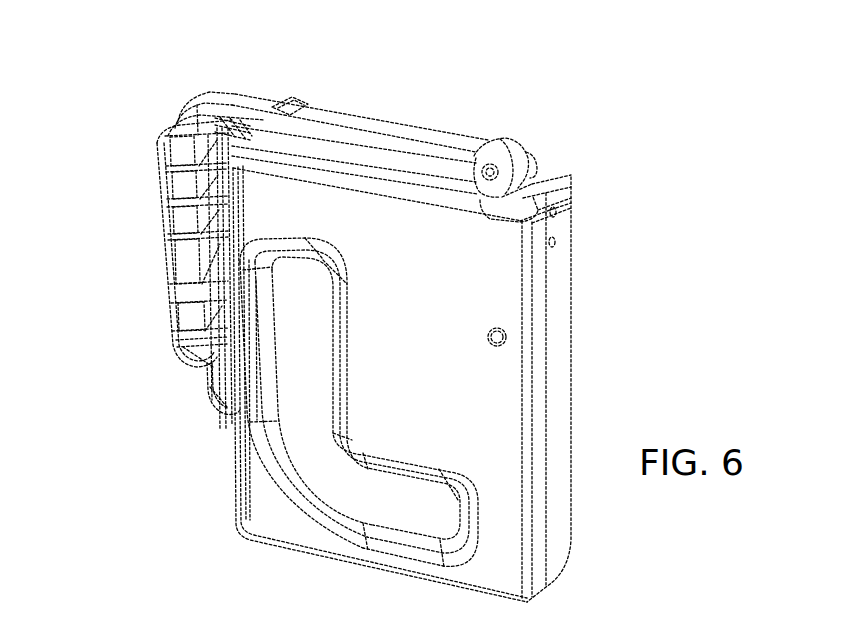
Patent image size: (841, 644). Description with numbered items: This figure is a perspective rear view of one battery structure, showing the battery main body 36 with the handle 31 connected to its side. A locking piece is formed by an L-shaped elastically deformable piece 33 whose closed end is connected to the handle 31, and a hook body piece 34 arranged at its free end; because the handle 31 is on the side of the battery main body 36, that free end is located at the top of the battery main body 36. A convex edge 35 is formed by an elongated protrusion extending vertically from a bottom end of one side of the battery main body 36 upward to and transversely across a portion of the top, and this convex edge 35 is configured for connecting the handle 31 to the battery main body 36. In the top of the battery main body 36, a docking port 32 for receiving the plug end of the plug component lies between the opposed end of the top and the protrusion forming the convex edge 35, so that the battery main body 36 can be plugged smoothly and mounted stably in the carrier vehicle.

The handle 31 is at (190, 267).
The docking port 32 is at (578, 196).
The L-shaped elastically deformable piece 33 is at (235, 98).
The hook body piece 34 is at (298, 103).
The convex edge 35 is at (410, 160).
The battery main body 36 is at (450, 280).